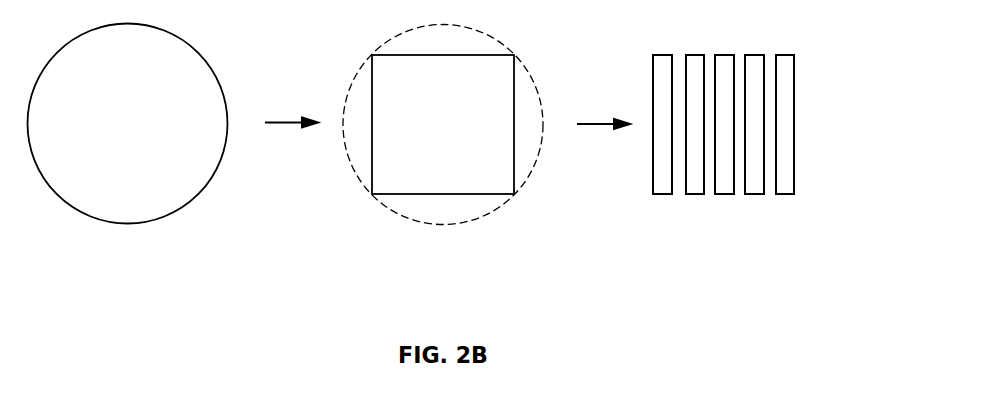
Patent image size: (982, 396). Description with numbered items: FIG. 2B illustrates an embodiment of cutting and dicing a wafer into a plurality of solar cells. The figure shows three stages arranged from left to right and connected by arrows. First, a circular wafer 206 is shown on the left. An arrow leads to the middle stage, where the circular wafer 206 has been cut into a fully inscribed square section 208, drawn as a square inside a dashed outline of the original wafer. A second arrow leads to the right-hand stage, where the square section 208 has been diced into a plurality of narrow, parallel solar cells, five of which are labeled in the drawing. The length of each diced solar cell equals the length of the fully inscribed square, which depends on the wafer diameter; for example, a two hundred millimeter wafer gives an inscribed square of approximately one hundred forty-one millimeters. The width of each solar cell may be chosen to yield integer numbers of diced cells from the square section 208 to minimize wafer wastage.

The circular wafer 206 is at (195, 195).
The fully inscribed square section 208 is at (514, 194).